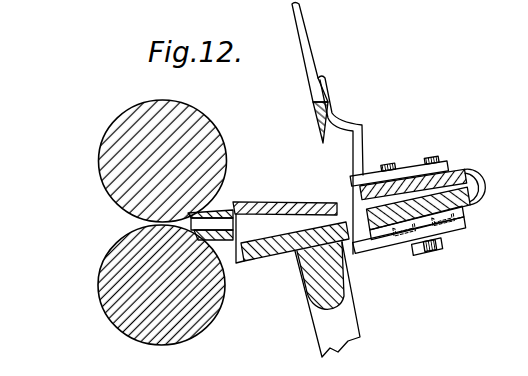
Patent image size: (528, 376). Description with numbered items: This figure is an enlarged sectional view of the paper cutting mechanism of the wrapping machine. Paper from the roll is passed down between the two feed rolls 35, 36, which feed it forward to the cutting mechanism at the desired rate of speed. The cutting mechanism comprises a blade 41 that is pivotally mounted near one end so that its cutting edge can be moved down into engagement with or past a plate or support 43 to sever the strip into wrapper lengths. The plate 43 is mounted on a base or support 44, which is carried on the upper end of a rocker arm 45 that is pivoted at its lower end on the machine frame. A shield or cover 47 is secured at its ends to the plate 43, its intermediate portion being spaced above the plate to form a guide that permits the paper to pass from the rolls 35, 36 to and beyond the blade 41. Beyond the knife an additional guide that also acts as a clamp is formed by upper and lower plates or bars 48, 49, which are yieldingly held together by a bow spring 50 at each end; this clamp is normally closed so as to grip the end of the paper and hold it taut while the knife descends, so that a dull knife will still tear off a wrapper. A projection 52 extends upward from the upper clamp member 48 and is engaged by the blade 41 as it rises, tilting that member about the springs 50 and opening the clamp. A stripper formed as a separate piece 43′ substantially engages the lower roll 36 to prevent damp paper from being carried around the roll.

The roll 35 is at (108, 148).
The lower roll 36 is at (115, 267).
The blade 41 is at (315, 113).
The plate 43 is at (269, 258).
The stripper 43′ is at (232, 245).
The base 44 is at (337, 286).
The rocker arm 45 is at (352, 317).
The shield 47 is at (289, 174).
The upper clamp plate 48 is at (450, 172).
The lower clamp plate 49 is at (472, 212).
The bow spring 50 is at (489, 185).
The projection 52 is at (360, 137).